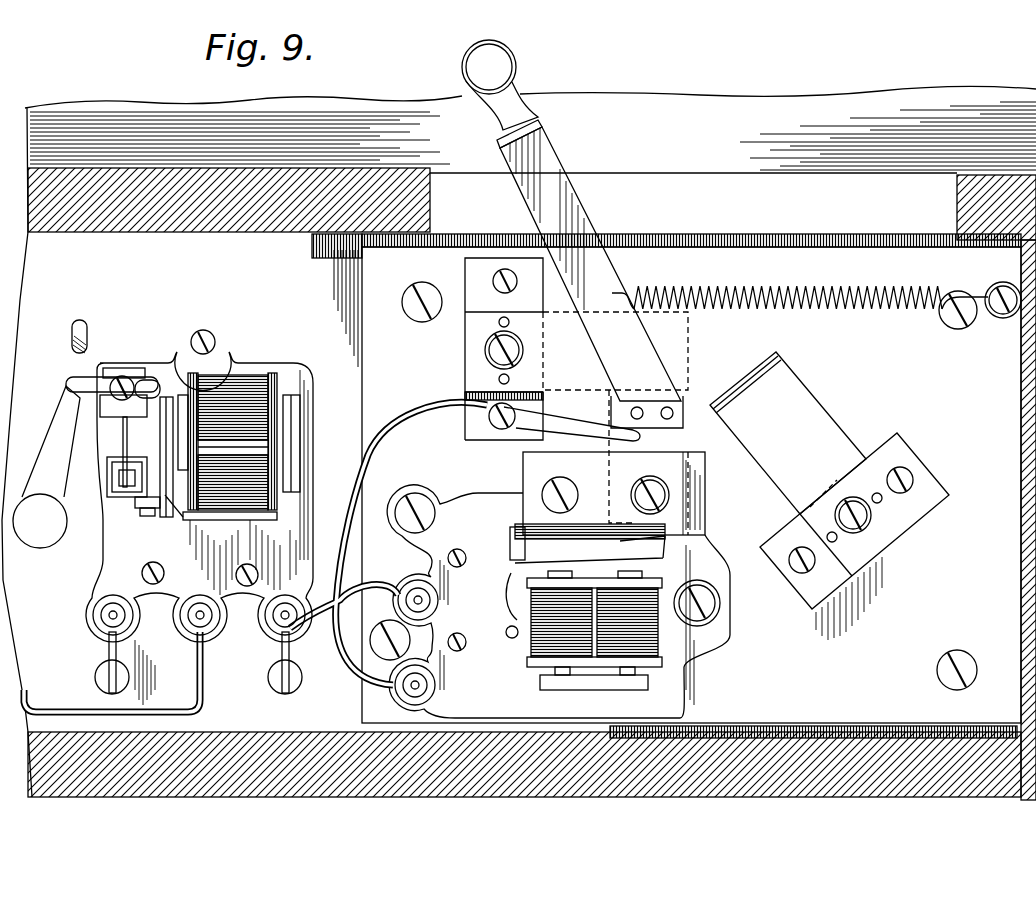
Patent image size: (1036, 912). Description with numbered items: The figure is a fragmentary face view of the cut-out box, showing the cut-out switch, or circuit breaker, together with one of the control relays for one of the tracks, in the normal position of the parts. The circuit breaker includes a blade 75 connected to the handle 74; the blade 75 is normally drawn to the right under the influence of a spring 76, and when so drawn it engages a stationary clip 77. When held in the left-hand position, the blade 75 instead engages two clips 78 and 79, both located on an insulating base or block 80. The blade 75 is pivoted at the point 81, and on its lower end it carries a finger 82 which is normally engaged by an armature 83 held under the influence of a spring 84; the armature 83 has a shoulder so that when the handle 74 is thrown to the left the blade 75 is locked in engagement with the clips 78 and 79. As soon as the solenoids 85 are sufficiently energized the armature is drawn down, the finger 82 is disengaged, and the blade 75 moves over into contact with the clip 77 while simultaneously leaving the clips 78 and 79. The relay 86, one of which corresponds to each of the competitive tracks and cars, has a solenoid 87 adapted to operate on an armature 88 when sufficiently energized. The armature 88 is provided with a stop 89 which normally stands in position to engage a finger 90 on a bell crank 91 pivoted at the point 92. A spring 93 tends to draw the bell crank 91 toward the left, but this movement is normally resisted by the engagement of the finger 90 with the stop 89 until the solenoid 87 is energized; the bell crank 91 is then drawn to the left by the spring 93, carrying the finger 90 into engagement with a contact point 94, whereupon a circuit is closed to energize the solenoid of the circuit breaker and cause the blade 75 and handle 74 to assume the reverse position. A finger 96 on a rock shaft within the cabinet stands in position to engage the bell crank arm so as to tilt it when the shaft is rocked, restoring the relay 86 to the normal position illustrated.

The handle 74 is at (500, 68).
The blade 75 is at (693, 373).
The spring 76 is at (855, 310).
The stationary clip 77 is at (805, 410).
The clip 78 is at (576, 396).
The clip 79 is at (540, 422).
The insulating base or block 80 is at (490, 410).
The pivot point 81 is at (680, 497).
The finger 82 is at (660, 540).
The armature 83 is at (585, 560).
The spring 84 is at (515, 600).
The solenoids 85 is at (680, 645).
The relay 86 is at (104, 573).
The solenoid 87 is at (240, 395).
The armature 88 is at (175, 445).
The stop 89 is at (172, 420).
The finger 90 is at (158, 393).
The bell crank 91 is at (67, 410).
The pivot point 92 is at (72, 382).
The spring 93 is at (122, 378).
The contact point 94 is at (135, 425).
The finger 96 is at (73, 342).